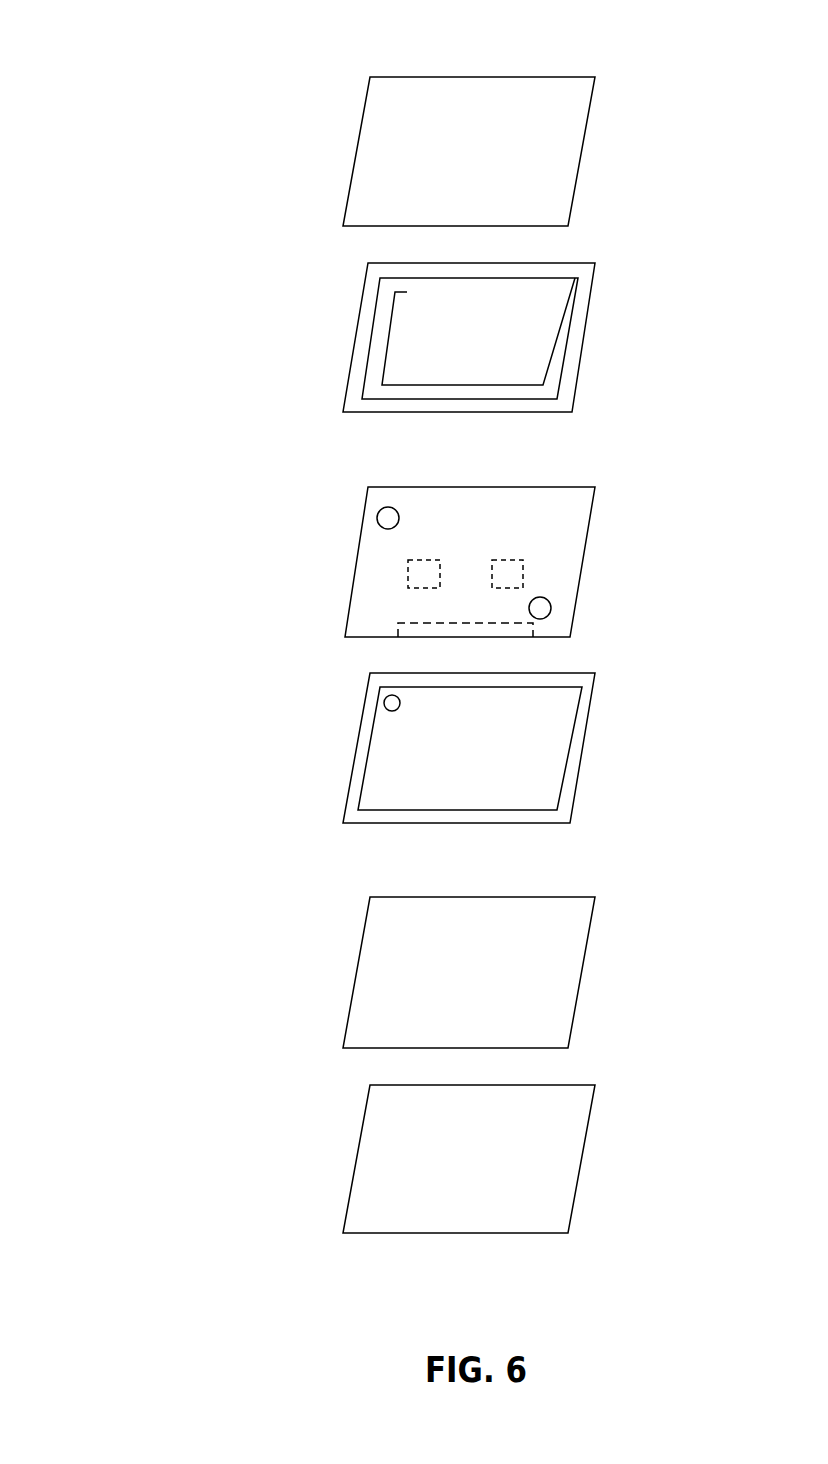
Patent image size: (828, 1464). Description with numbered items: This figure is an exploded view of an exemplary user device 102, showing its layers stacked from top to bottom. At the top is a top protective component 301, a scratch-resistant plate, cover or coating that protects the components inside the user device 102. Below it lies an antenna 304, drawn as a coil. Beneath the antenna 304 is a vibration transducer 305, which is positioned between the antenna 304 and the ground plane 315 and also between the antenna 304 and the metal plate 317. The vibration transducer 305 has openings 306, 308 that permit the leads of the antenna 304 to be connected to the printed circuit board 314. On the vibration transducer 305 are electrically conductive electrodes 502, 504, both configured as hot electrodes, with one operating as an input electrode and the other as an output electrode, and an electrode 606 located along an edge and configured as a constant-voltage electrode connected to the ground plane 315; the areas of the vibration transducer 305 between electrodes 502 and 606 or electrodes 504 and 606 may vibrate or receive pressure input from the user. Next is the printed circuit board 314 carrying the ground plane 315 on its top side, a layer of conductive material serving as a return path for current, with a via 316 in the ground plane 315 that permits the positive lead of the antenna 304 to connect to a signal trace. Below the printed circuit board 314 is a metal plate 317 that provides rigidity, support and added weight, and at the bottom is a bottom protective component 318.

The user device 102 is at (133, 86).
The top protective component 301 is at (360, 127).
The antenna 304 is at (352, 354).
The vibration transducer 305 is at (355, 563).
The opening 306 is at (377, 518).
The opening 308 is at (552, 608).
The electrode 502 is at (418, 560).
The electrode 504 is at (505, 560).
The electrode 606 is at (520, 638).
The printed circuit board 314 is at (355, 760).
The ground plane 315 is at (575, 750).
The via 316 is at (384, 703).
The metal plate 317 is at (355, 970).
The bottom protective component 318 is at (355, 1157).